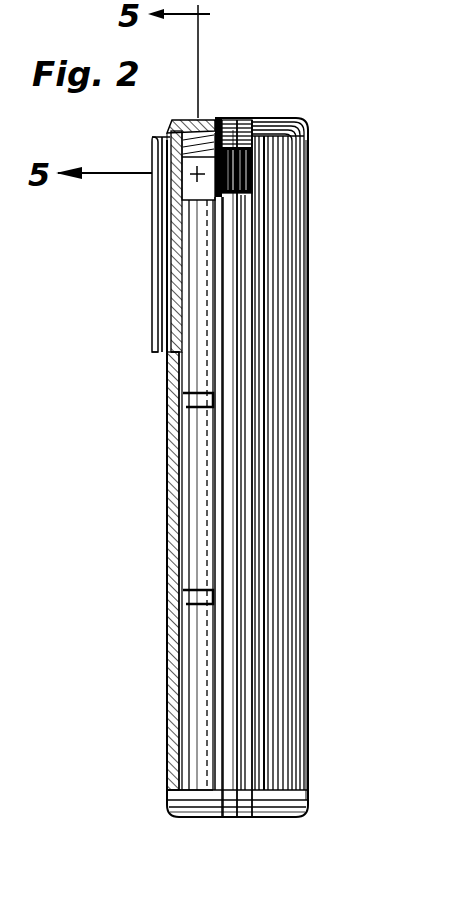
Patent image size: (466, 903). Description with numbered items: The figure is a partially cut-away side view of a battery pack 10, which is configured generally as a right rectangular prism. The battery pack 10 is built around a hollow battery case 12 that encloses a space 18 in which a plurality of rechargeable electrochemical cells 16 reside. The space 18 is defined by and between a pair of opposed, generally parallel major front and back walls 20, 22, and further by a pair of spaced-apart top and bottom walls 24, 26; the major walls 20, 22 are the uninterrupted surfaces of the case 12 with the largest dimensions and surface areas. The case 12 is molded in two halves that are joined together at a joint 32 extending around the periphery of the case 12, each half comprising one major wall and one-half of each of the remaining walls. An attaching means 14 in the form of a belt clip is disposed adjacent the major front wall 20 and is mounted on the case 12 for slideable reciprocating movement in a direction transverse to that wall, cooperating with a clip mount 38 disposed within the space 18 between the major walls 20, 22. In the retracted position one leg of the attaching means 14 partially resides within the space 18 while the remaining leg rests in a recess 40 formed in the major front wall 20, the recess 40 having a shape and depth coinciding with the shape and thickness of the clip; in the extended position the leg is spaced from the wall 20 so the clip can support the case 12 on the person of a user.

The battery pack 10 is at (352, 80).
The battery case 12 is at (283, 268).
The attaching means 14 is at (152, 247).
The rechargeable electrochemical cells 16 is at (192, 382).
The space 18 is at (190, 192).
The major front wall 20 is at (172, 422).
The major back wall 22 is at (310, 383).
The top wall 24 is at (247, 118).
The bottom wall 26 is at (250, 818).
The joint 32 is at (237, 318).
The clip mount 38 is at (210, 120).
The recess 40 is at (172, 285).